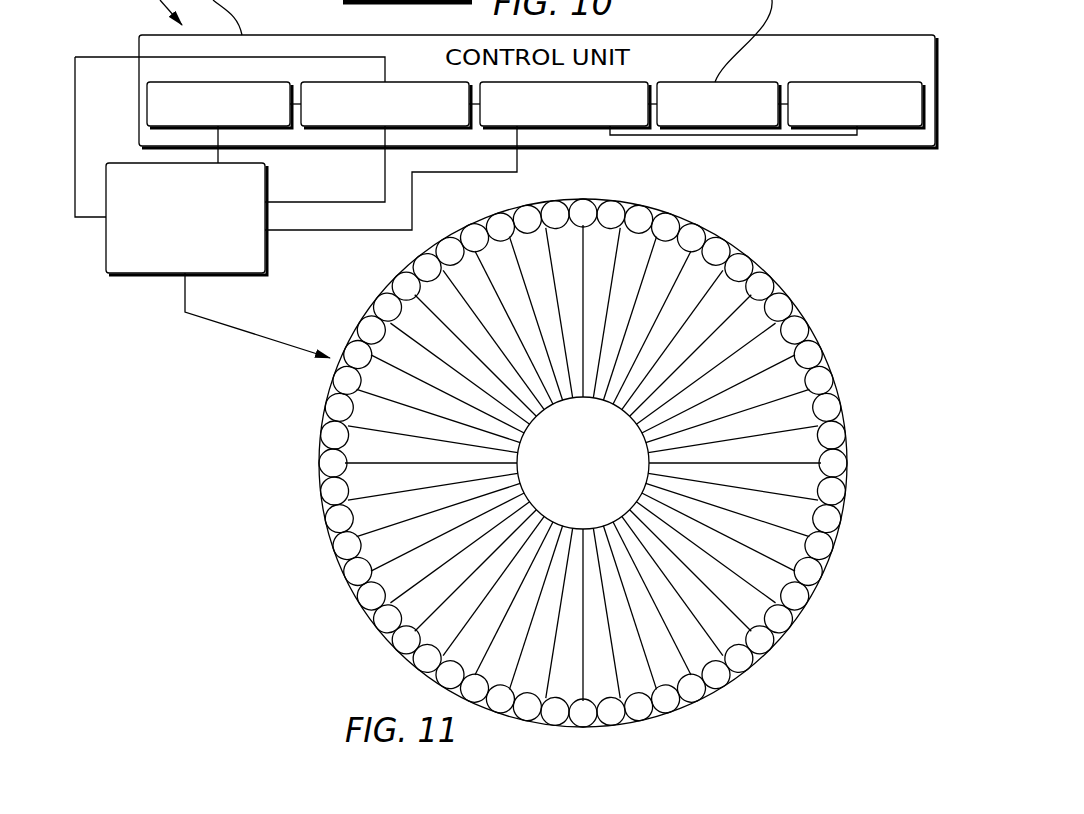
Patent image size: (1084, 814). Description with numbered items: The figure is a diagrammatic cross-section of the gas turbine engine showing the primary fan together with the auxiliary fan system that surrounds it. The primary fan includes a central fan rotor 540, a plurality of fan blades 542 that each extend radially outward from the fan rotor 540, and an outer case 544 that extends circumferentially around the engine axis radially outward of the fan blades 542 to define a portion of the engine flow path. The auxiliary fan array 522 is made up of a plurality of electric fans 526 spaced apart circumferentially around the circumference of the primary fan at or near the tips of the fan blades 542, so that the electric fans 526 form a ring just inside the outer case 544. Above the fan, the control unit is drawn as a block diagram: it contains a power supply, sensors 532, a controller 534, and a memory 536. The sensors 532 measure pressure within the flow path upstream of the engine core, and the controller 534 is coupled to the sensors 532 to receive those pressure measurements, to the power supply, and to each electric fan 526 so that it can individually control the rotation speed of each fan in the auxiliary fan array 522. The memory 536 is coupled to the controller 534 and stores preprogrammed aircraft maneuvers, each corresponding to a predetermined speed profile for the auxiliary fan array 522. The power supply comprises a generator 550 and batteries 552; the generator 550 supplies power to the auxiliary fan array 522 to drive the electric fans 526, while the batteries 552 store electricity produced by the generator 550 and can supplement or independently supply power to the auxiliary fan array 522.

In FIG. 10, the auxiliary fan array 522 is at (140, 273).
In FIG. 11, the electric fan 526 is at (323, 380).
In FIG. 10, the sensors 532 is at (857, 82).
In FIG. 10, the controller 534 is at (627, 82).
In FIG. 10, the memory 536 is at (718, 105).
In FIG. 11, the fan rotor 540 is at (652, 430).
In FIG. 11, the fan blades 542 is at (767, 350).
In FIG. 11, the outer case 544 is at (768, 255).
In FIG. 10, the generator 550 is at (422, 82).
In FIG. 10, the batteries 552 is at (232, 82).